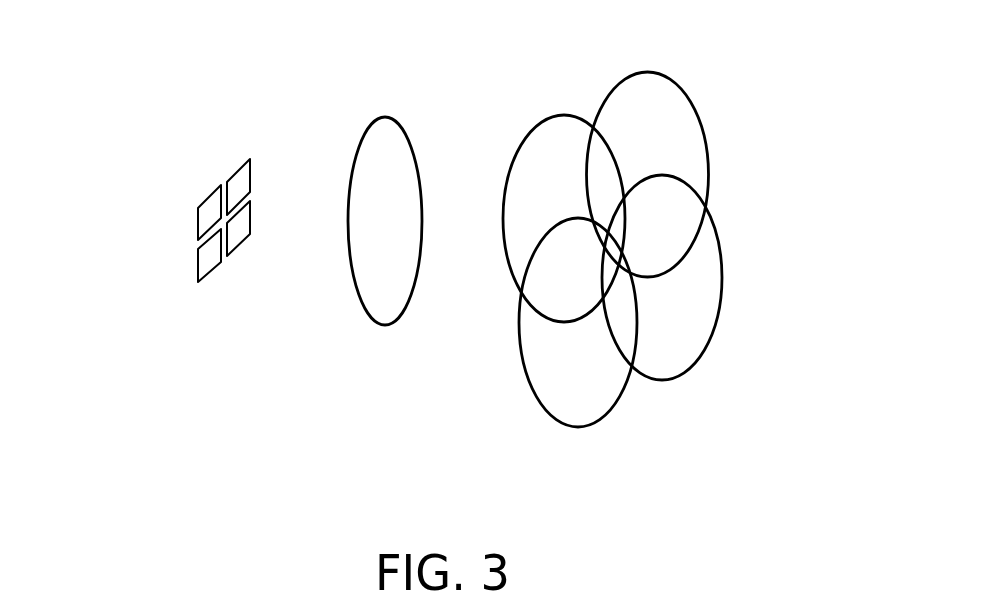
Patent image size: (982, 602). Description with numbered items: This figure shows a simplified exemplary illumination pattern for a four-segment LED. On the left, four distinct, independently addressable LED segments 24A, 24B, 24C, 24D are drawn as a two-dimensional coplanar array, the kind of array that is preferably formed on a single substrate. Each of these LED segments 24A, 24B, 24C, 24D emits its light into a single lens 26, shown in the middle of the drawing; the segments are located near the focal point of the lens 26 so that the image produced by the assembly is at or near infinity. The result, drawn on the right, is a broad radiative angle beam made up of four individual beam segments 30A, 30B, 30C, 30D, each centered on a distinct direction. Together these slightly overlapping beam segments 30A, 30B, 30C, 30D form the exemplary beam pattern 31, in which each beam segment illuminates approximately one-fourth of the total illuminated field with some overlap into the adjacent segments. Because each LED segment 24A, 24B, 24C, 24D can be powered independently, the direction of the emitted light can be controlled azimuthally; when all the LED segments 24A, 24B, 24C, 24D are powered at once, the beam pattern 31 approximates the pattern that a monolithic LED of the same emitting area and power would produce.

The LED segment 24A is at (198, 212).
The LED segment 24B is at (237, 167).
The LED segment 24C is at (243, 237).
The LED segment 24D is at (210, 270).
The lens 26 is at (380, 118).
The beam segment 30A is at (540, 122).
The beam segment 30B is at (698, 113).
The beam segment 30C is at (700, 360).
The beam segment 30D is at (517, 343).
The beam pattern 31 is at (645, 281).